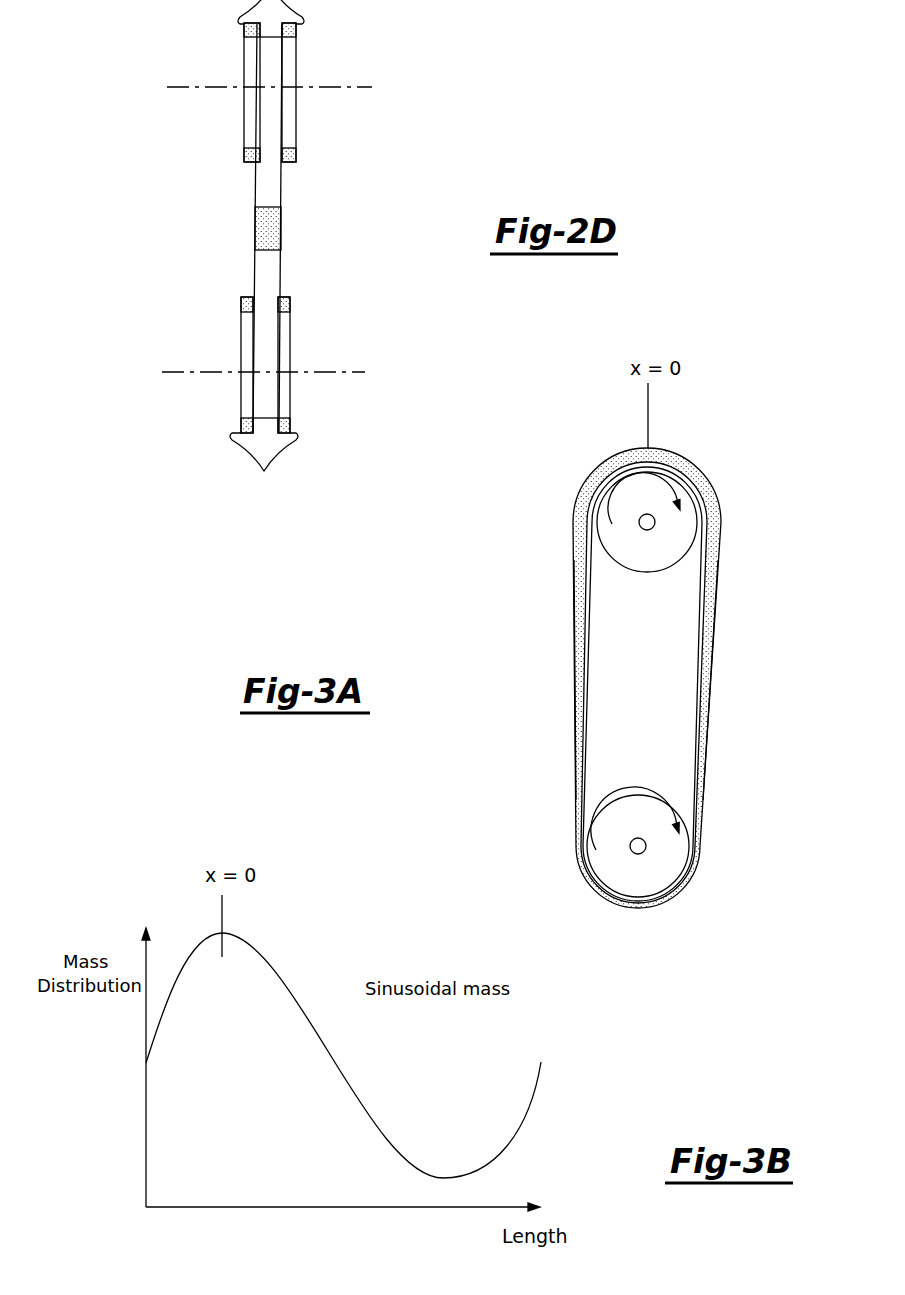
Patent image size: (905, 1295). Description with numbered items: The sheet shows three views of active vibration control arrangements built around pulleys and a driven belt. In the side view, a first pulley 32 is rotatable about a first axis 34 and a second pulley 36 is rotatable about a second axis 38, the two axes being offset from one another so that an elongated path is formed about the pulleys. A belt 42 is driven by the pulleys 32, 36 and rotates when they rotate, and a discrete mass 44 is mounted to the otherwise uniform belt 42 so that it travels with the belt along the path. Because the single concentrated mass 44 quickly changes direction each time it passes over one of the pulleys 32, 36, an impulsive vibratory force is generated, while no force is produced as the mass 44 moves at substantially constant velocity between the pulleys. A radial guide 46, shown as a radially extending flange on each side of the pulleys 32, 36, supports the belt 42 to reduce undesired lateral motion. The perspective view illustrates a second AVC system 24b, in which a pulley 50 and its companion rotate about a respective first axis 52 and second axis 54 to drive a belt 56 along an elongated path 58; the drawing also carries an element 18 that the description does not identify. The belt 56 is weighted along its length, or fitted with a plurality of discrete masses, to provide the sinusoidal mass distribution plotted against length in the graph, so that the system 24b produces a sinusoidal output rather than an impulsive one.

In FIG. 2D, the second pulley 36 is at (236, 63).
In FIG. 2D, the second axis 38 is at (353, 85).
In FIG. 2D, the discrete mass 44 is at (282, 228).
In FIG. 2D, the belt 42 is at (282, 270).
In FIG. 2D, the first pulley 32 is at (233, 338).
In FIG. 2D, the first axis 34 is at (348, 368).
In FIG. 2D, the radial guide 46 is at (264, 467).
In FIG. 3A, the AVC system 24b is at (718, 443).
In FIG. 3A, the second axis 54 is at (655, 522).
In FIG. 3A, the pulley 50 is at (645, 571).
In FIG. 3A, the belt 56 is at (580, 688).
In FIG. 3A, the elongated path 58 is at (718, 702).
In FIG. 3A, the second pulley 18 is at (642, 795).
In FIG. 3A, the first axis 52 is at (630, 846).